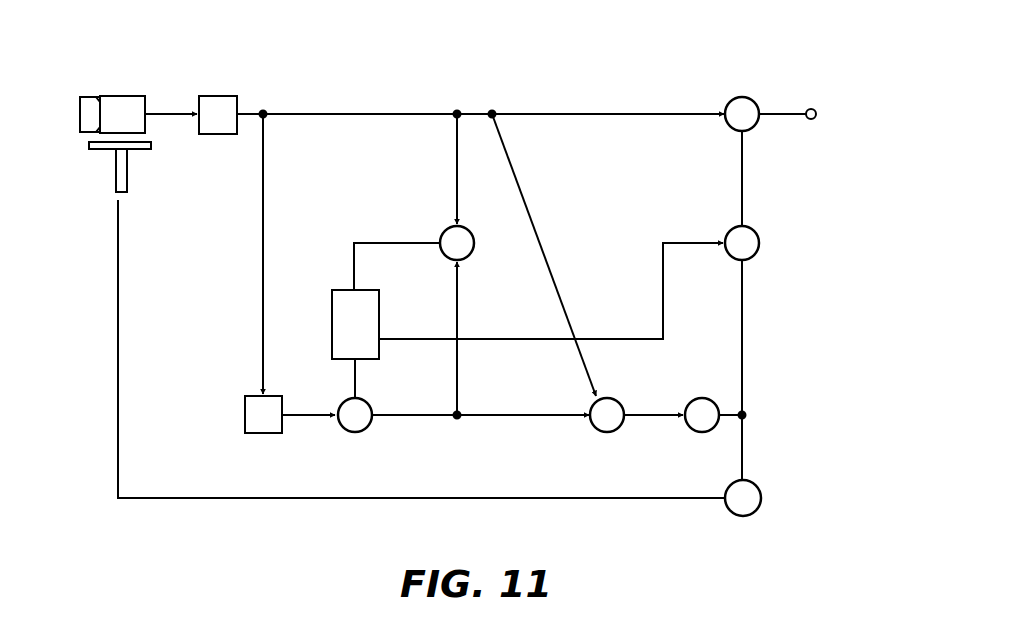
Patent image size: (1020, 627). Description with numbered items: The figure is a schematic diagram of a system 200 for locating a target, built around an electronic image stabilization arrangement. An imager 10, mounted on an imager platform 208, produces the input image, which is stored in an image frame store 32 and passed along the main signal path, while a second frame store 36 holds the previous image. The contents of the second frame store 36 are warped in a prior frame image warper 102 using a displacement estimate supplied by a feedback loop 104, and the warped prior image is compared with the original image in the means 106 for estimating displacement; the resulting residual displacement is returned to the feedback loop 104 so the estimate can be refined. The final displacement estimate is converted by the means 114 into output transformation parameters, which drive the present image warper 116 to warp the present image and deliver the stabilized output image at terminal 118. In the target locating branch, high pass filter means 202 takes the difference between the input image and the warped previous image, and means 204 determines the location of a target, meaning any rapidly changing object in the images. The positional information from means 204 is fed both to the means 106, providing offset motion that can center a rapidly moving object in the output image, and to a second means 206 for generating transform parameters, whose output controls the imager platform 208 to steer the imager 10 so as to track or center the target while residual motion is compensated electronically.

The imager 10 is at (108, 95).
The image frame store 32 is at (217, 96).
The second frame store 36 is at (245, 418).
The prior frame image warper 102 is at (357, 433).
The feedback loop 104 is at (332, 316).
The means for estimating displacement 106 is at (443, 229).
The means for converting the final estimate of the displacement to output transforma 114 is at (760, 243).
The present image warper 116 is at (744, 97).
The terminal 118 is at (816, 114).
The system 200 is at (348, 96).
The high pass filter means 202 is at (609, 433).
The means for determining the location of a target 204 is at (703, 433).
The second means for generating transform parameters 206 is at (761, 498).
The imager platform 208 is at (106, 173).